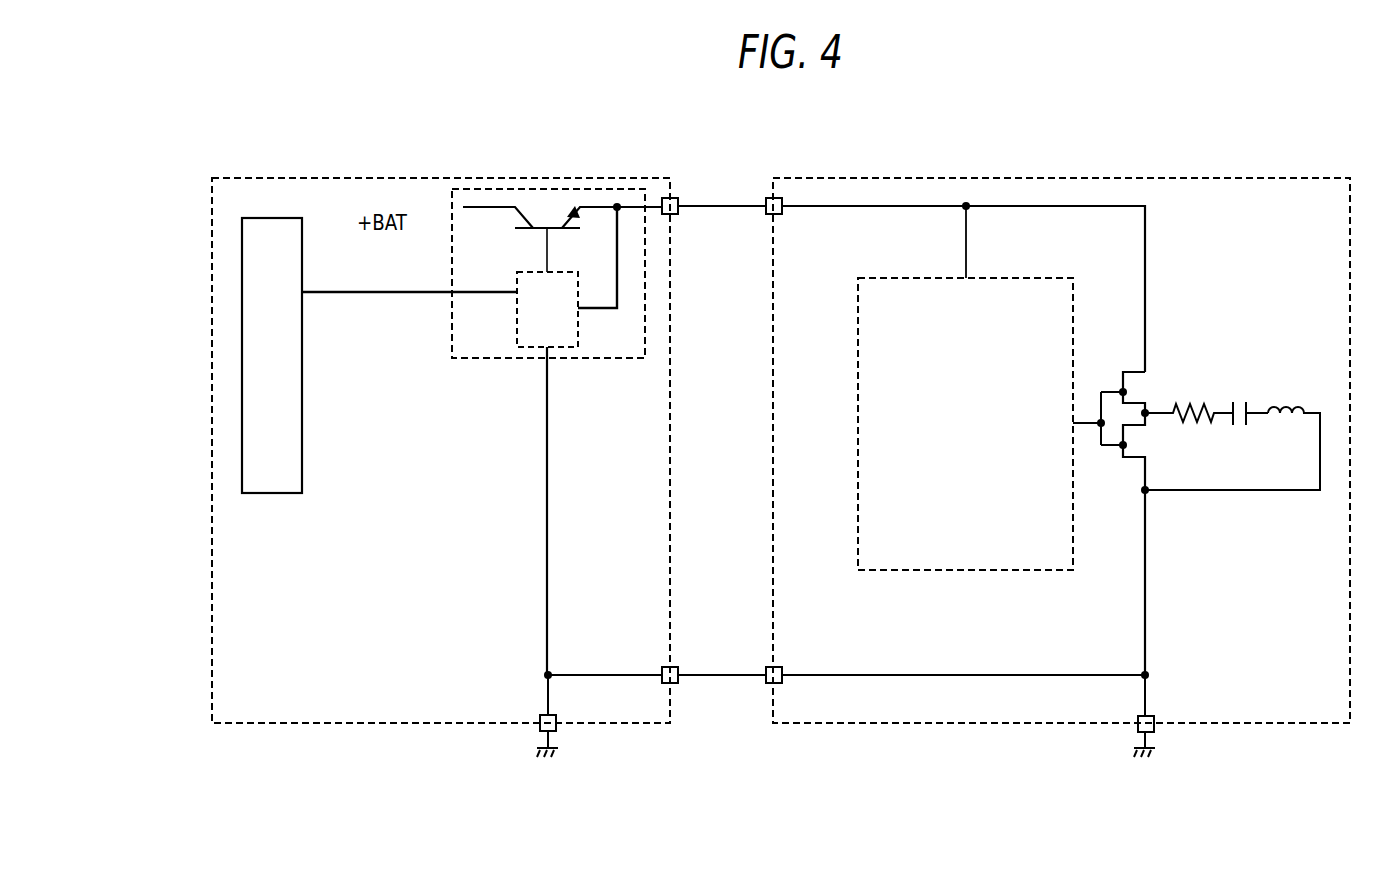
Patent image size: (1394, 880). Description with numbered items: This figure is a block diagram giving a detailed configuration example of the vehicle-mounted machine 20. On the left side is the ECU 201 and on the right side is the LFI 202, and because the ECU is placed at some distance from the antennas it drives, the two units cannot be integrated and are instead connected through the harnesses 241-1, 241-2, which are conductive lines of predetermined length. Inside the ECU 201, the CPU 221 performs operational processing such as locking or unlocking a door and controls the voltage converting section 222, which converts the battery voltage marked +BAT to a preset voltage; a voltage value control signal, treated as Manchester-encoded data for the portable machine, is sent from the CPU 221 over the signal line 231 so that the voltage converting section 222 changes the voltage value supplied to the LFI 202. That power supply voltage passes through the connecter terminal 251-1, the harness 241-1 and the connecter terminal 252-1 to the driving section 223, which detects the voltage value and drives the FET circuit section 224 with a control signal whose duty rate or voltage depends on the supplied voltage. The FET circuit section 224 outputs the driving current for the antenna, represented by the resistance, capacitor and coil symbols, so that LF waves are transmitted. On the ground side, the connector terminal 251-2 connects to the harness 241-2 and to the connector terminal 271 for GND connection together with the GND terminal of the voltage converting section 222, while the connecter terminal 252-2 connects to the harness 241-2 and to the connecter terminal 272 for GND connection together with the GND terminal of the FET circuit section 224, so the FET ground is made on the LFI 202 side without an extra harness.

The vehicle-mounted machine 20 is at (717, 736).
The ECU 201 is at (438, 178).
The LFI 202 is at (1063, 178).
The CPU 221 is at (272, 494).
The voltage converting section 222 is at (497, 358).
The driving section 223 is at (966, 571).
The FET circuit section 224 is at (1132, 404).
The signal line 231 is at (375, 293).
The harness 241-1 is at (705, 209).
The harness 241-2 is at (707, 675).
The connecter terminal 251-1 is at (679, 199).
The connector terminal 251-2 is at (662, 668).
The connecter terminal 252-1 is at (783, 212).
The connecter terminal 252-2 is at (782, 668).
The connector terminal for GND connection 271 is at (540, 717).
The connecter terminal for GND connection 272 is at (1153, 718).